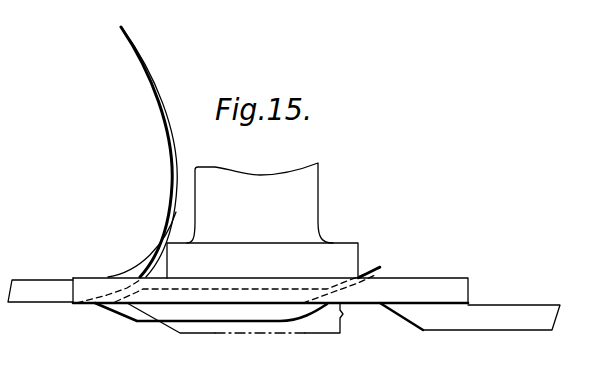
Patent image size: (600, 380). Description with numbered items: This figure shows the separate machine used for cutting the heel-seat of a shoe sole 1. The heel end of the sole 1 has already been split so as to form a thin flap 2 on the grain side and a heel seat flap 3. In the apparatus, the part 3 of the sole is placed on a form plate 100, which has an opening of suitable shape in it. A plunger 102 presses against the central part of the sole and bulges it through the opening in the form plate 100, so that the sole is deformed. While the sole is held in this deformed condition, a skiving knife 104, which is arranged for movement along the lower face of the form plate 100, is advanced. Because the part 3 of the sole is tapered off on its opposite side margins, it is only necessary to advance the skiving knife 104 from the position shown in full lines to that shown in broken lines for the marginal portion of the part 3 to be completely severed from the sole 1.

The shoe sole 1 is at (68, 297).
The thin flap 2 is at (170, 185).
The heel seat flap 3 is at (380, 267).
The form plate 100 is at (378, 293).
The plunger 102 is at (262, 260).
The skiving knife 104 is at (437, 323).